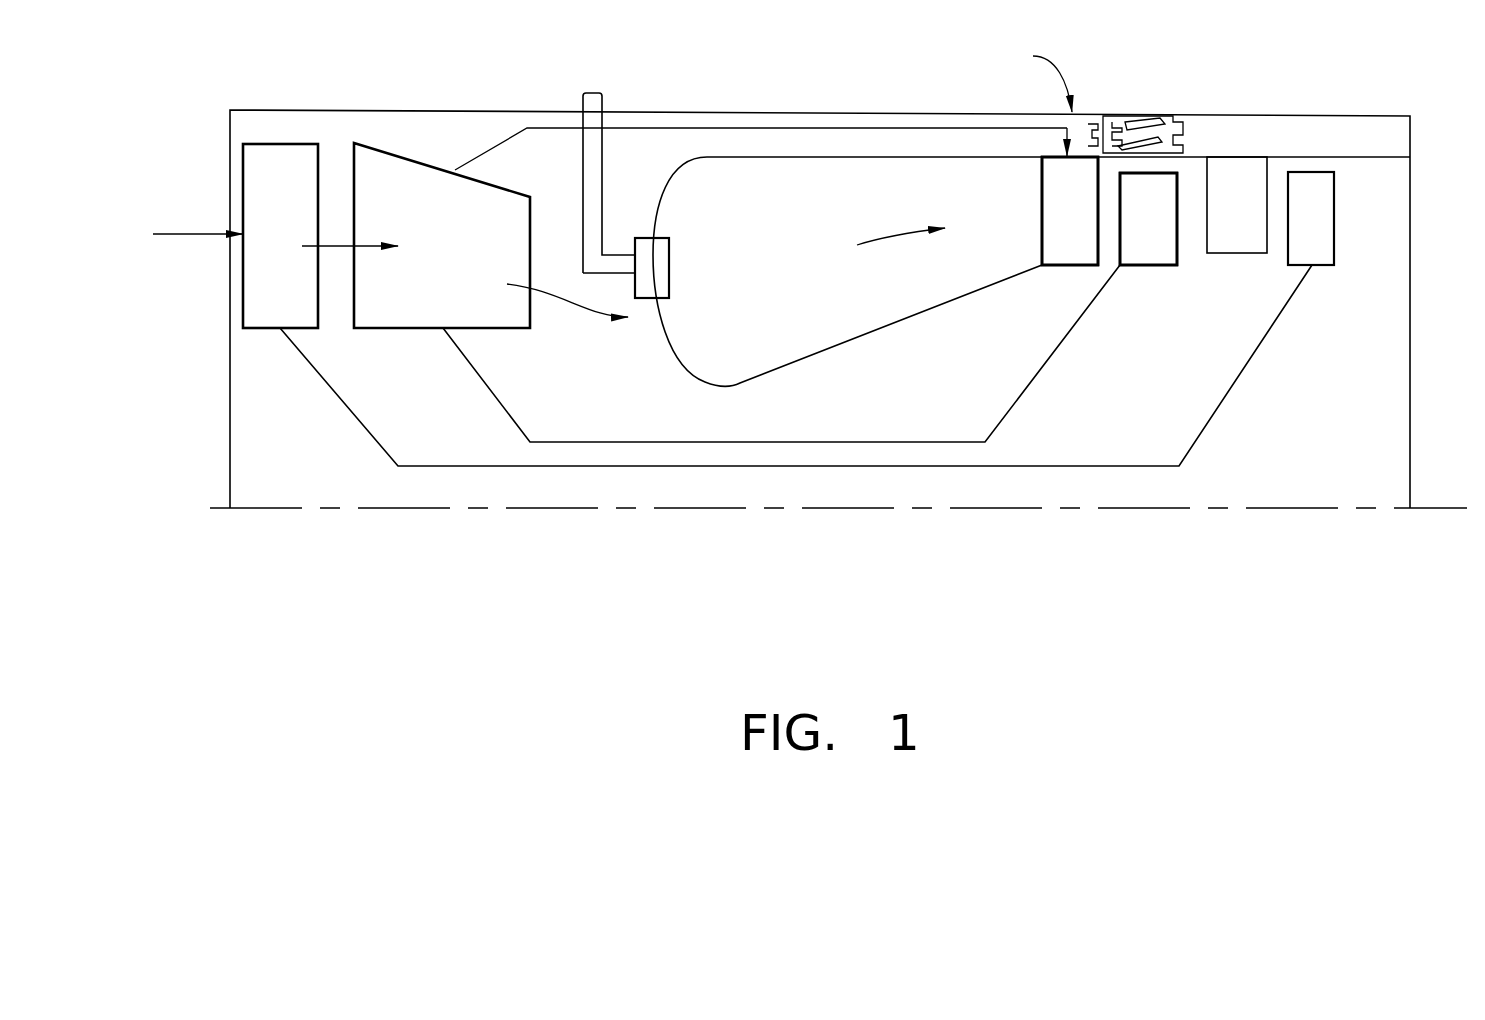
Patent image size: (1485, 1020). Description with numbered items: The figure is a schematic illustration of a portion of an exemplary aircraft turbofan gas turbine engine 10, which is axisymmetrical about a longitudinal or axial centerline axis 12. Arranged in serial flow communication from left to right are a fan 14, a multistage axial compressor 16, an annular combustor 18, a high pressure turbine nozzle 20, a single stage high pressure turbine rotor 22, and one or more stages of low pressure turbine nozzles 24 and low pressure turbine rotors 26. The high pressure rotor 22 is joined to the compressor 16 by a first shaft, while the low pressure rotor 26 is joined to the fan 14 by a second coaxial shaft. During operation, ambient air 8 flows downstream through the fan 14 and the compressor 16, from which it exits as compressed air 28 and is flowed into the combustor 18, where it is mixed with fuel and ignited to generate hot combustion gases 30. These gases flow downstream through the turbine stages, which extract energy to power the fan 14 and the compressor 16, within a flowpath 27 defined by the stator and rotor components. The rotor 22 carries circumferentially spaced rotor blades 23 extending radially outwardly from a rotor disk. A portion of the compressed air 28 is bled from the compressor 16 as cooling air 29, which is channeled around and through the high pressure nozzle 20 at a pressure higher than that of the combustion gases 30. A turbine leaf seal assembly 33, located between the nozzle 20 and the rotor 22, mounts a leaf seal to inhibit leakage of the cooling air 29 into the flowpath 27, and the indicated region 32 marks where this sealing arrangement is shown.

The ambient air 8 is at (165, 233).
The aircraft turbofan gas turbine engine 10 is at (1430, 142).
The longitudinal centerline axis 12 is at (1230, 508).
The fan 14 is at (296, 208).
The multistage axial compressor 16 is at (453, 238).
The annular combustor 18 is at (737, 230).
The high pressure turbine nozzle 20 is at (1053, 275).
The high pressure turbine rotor 22 is at (1157, 280).
The rotor blades 23 is at (1160, 251).
The low pressure turbine nozzle 24 is at (1225, 157).
The low pressure turbine rotor 26 is at (1313, 172).
The flowpath 27 is at (1054, 231).
The compressed air 28 is at (570, 313).
The cooling air 29 is at (653, 128).
The hot combustion gases 30 is at (880, 245).
The cooling air 32 is at (1035, 75).
The turbine leaf seal assembly 33 is at (1093, 118).